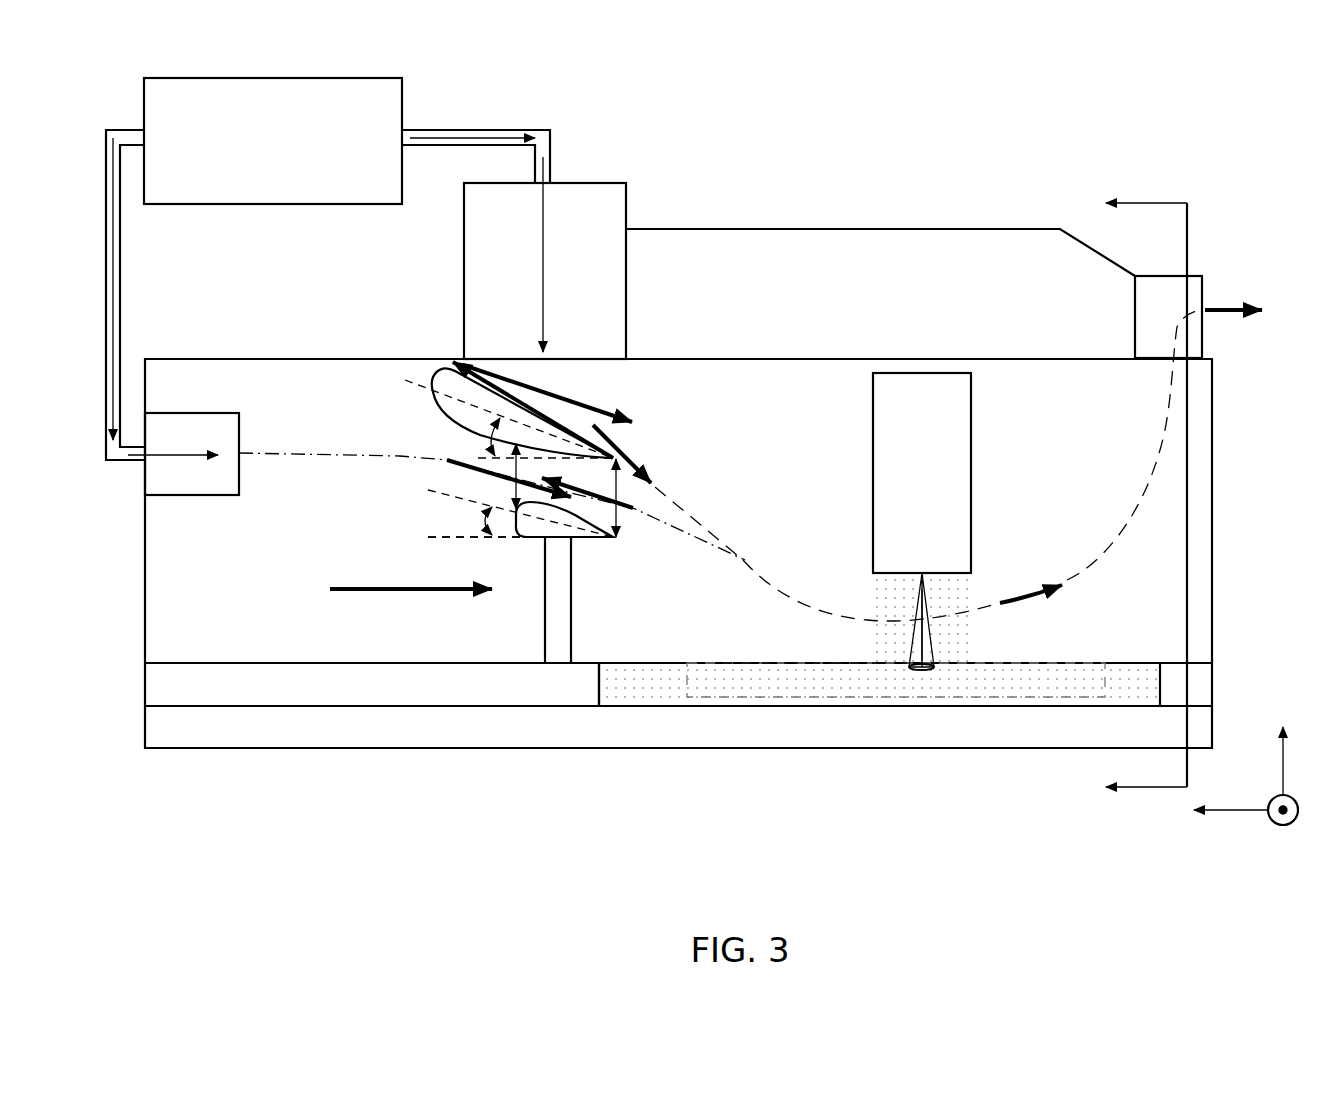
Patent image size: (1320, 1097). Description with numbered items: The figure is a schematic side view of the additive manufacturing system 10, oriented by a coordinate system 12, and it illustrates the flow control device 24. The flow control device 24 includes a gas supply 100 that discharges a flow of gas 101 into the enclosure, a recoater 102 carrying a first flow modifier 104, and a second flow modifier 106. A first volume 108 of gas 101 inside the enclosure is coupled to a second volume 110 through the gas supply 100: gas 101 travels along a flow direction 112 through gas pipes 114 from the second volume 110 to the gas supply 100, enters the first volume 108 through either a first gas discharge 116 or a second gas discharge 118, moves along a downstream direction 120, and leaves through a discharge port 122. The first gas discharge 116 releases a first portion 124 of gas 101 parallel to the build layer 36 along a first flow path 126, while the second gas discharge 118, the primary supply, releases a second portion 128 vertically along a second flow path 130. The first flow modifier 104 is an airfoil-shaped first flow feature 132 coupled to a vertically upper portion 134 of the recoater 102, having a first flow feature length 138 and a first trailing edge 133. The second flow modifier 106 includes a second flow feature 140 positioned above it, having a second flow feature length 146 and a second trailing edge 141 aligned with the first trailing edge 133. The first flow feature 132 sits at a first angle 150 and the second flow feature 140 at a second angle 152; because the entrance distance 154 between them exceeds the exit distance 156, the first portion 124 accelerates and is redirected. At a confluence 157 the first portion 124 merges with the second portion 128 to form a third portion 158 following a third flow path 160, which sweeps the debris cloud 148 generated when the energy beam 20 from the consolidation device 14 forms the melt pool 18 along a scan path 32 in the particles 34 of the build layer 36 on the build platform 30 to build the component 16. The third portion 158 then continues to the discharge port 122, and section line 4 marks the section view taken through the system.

The additive manufacturing system 10 is at (1035, 95).
The gas supply 100 is at (675, 150).
The second volume 110 is at (196, 153).
The gas 101 is at (306, 153).
The flow direction 112 is at (508, 132).
The gas pipes 114 is at (440, 130).
The second gas discharge 118 is at (462, 300).
The second portion 128 is at (547, 292).
The flow control device 24 is at (710, 350).
The section line 4 is at (1135, 496).
The discharge port 122 is at (1205, 288).
The first volume 108 is at (221, 563).
The first gas discharge 116 is at (195, 412).
The first portion 124 is at (178, 460).
The first flow path 126 is at (306, 452).
The downstream direction 120 is at (407, 592).
The second flow modifier 106 is at (432, 395).
The first flow feature 132 is at (432, 405).
The second flow feature length 146 is at (565, 388).
The second flow path 130 is at (567, 383).
The second trailing edge 141 is at (640, 422).
The first flow feature length 138 is at (620, 476).
The exit distance 156 is at (660, 498).
The confluence 157 is at (744, 563).
The third portion 158 is at (1008, 600).
The third flow path 160 is at (1132, 514).
The second angle 152 is at (478, 438).
The entrance distance 154 is at (458, 470).
The first flow modifier 104 is at (603, 546).
The first angle 150 is at (483, 515).
The second flow feature 140 is at (510, 545).
The vertically upper portion 134 is at (533, 552).
The first trailing edge 133 is at (617, 541).
The recoater 102 is at (572, 637).
The component 16 is at (760, 680).
The scan path 32 is at (818, 660).
The build layer 36 is at (650, 672).
The particles 34 is at (690, 678).
The build platform 30 is at (990, 742).
The consolidation device 14 is at (975, 412).
The debris cloud 148 is at (868, 582).
The melt pool 18 is at (912, 668).
The energy beam 20 is at (940, 640).
The coordinate system 12 is at (1245, 840).